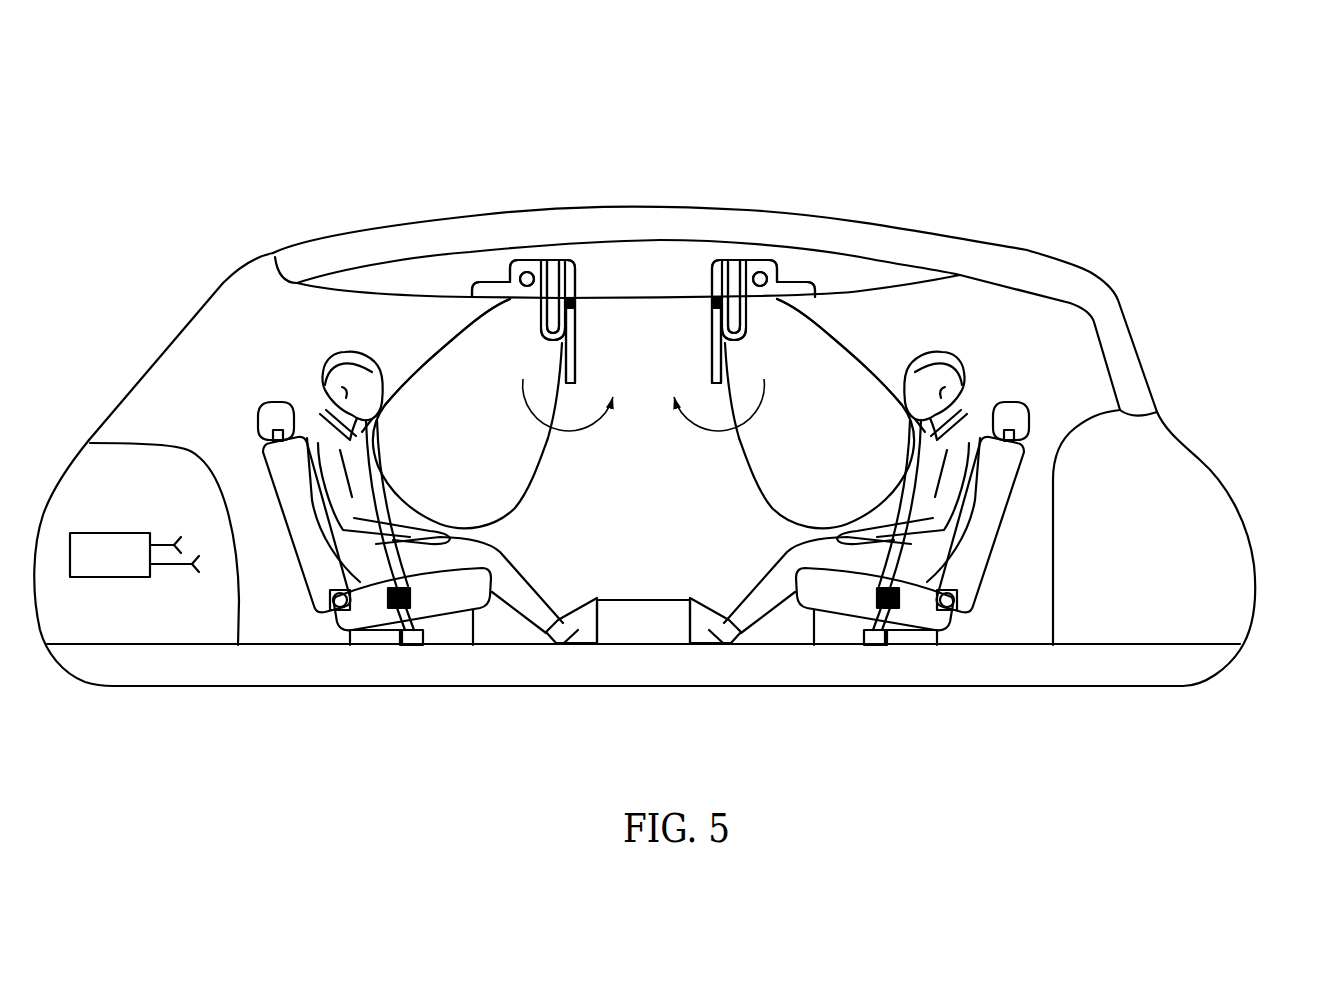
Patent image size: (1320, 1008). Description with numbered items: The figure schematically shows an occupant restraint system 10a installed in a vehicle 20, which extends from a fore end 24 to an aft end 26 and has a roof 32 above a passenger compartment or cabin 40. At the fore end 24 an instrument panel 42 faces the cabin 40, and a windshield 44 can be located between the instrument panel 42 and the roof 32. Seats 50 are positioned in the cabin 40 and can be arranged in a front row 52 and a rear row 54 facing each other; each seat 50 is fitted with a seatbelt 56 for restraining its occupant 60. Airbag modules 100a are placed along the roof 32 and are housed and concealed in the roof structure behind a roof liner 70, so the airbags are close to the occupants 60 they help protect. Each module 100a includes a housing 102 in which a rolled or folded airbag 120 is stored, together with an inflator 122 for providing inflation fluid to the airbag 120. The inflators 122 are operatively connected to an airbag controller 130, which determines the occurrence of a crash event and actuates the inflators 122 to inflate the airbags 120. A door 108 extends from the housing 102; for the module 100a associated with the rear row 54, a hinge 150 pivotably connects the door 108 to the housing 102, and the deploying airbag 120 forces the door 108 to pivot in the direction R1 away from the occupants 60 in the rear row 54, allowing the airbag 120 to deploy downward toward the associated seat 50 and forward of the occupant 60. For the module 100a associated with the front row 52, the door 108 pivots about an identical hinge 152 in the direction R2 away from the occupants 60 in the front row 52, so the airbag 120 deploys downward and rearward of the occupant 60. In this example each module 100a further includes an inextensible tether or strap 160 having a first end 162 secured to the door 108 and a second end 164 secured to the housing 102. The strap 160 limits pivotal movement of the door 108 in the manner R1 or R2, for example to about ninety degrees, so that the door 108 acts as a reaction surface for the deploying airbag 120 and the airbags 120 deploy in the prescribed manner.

The occupant restraint system 10a is at (613, 265).
The vehicle 20 is at (1215, 565).
The first or fore end 24 is at (120, 433).
The second or aft end 26 is at (1190, 390).
The roof 32 is at (920, 248).
The passenger compartment or cabin 40 is at (657, 456).
The instrument panel 42 is at (183, 443).
The windshield or windscreen 44 is at (165, 349).
The seat 50 is at (315, 586).
The front row 52 is at (395, 706).
The rear row 54 is at (873, 706).
The seatbelt 56 is at (405, 540).
The occupant 60 is at (376, 456).
The roof liner 70 is at (660, 298).
The airbag module 100a is at (510, 262).
The housing 102 is at (571, 258).
The door 108 is at (577, 368).
The inflatable curtain airbag 120 is at (512, 472).
The inflator 122 is at (522, 272).
The airbag controller 130 is at (112, 543).
The hinge 150 is at (703, 297).
The hinge 152 is at (578, 307).
The inextensible tether or strap 160 is at (538, 324).
The first end 162 is at (548, 345).
The second end 164 is at (553, 285).
The pivoting direction R1 is at (755, 414).
The pivoting direction R2 is at (532, 414).